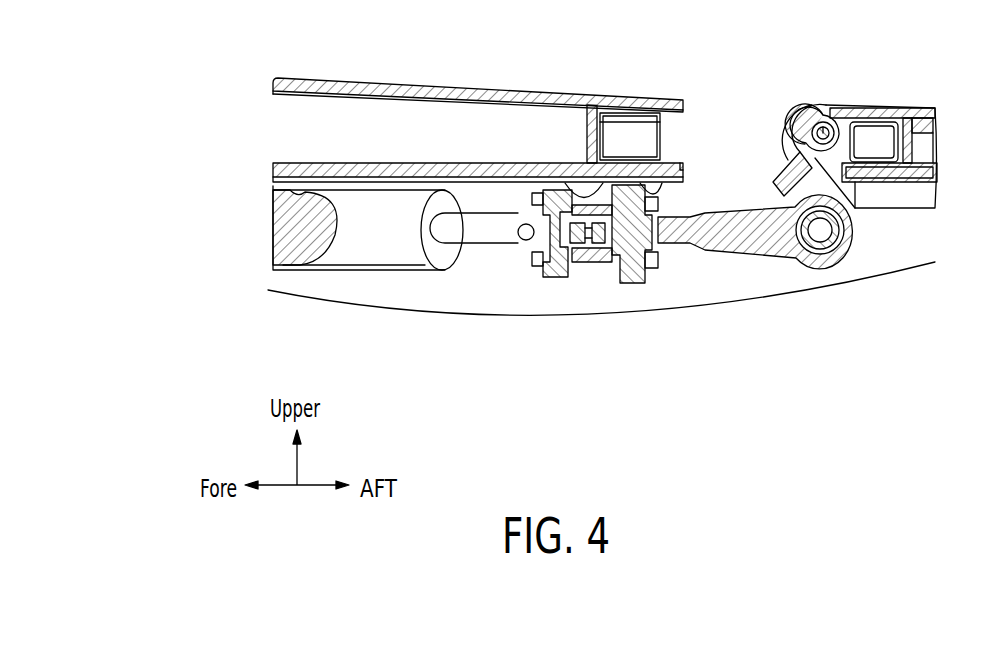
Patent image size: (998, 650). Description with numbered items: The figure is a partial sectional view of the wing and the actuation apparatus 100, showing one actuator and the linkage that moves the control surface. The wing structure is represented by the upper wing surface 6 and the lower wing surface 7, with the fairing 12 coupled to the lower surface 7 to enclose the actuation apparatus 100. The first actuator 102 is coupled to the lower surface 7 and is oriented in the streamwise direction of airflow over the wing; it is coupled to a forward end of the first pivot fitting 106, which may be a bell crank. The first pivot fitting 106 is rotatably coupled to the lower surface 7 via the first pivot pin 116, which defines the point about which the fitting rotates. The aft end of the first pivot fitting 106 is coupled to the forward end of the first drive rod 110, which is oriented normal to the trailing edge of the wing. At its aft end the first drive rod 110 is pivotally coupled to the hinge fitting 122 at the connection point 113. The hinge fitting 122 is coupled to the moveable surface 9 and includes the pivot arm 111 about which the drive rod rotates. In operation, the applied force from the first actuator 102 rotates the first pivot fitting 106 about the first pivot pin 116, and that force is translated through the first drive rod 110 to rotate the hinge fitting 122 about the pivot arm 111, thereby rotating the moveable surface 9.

The upper wing surface 6 is at (420, 88).
The lower wing surface 7 is at (457, 175).
The moveable surface 9 is at (917, 108).
The fairing 12 is at (635, 312).
The actuation apparatus 100 is at (118, 320).
The first actuator 102 is at (290, 228).
The first pivot fitting 106 is at (593, 203).
The first drive rod 110 is at (737, 232).
The pivot arm 111 is at (828, 133).
The connection point 113 is at (820, 232).
The first pivot pin 116 is at (627, 222).
The hinge fitting 122 is at (865, 145).